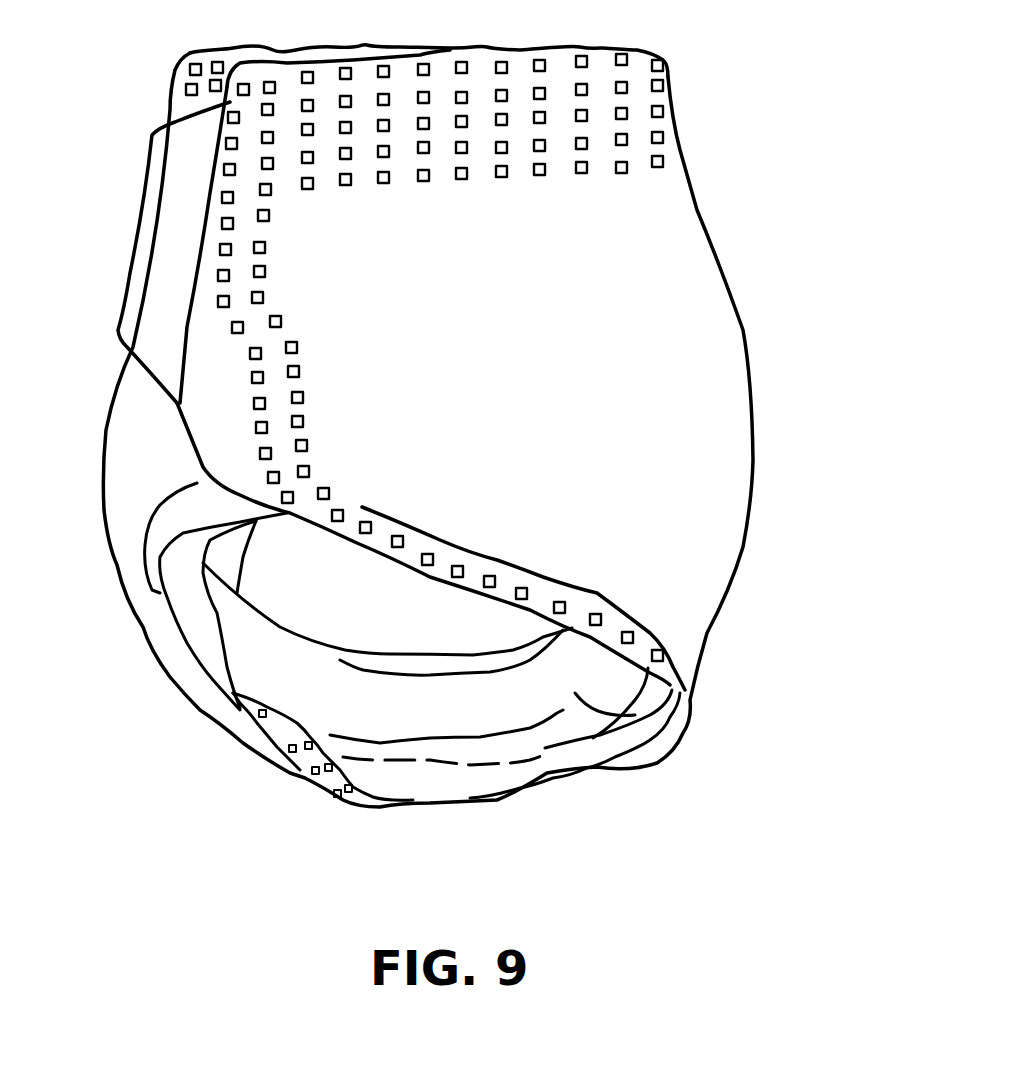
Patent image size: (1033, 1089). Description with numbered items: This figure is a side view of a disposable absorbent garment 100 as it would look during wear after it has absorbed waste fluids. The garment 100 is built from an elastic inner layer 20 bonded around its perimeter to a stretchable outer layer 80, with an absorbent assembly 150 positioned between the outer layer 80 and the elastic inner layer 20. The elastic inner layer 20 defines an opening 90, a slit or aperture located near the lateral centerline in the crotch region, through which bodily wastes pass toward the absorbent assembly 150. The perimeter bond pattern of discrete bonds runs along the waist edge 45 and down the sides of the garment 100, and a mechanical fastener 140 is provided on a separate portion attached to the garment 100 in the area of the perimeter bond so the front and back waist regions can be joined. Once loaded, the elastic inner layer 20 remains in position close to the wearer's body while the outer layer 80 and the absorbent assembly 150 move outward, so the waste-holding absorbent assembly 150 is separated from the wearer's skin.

The disposable absorbent garment 100 is at (783, 130).
The waist edge 45 is at (667, 67).
The outer layer 80 is at (720, 457).
The mechanical fastener 140 is at (150, 152).
The elastic inner layer 20 is at (330, 722).
The opening 90 is at (425, 665).
The absorbent assembly 150 is at (530, 793).